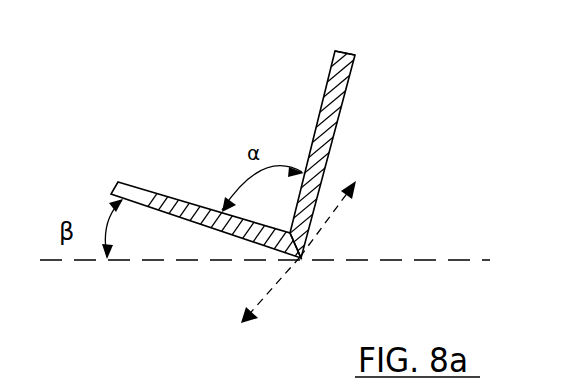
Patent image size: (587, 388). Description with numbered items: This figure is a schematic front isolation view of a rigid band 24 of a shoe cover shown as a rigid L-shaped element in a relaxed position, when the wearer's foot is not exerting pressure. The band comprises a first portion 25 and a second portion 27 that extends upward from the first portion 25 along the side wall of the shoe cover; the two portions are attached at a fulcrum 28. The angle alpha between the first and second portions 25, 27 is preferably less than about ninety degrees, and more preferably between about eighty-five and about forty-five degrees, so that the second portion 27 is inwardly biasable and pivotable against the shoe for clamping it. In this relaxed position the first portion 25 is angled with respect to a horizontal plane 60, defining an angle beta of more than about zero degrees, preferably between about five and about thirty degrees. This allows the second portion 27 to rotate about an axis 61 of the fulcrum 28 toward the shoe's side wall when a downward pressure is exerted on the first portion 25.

The rigid band 24 is at (356, 130).
The first portion 25 is at (133, 186).
The second portion 27 is at (340, 87).
The fulcrum 28 is at (312, 252).
The horizontal plane 60 is at (286, 262).
The axis 61 is at (261, 304).